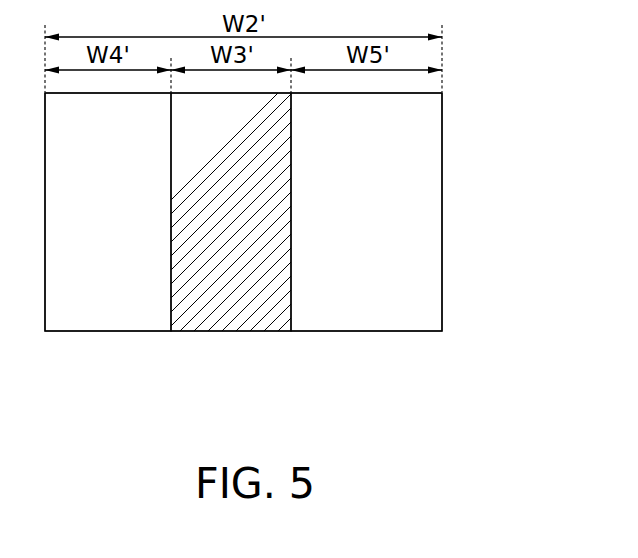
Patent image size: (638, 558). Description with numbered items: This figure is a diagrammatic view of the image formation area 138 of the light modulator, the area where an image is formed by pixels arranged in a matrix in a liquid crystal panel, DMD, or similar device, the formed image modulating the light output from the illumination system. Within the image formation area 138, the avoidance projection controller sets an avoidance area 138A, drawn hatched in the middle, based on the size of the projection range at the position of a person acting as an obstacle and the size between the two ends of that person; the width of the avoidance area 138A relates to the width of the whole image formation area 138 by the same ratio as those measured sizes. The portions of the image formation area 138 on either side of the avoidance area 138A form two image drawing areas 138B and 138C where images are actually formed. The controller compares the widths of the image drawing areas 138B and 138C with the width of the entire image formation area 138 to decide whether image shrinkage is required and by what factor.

The image formation area 138 is at (443, 203).
The avoidance area 138A is at (227, 333).
The image drawing area 138B is at (368, 333).
The image drawing area 138C is at (98, 333).